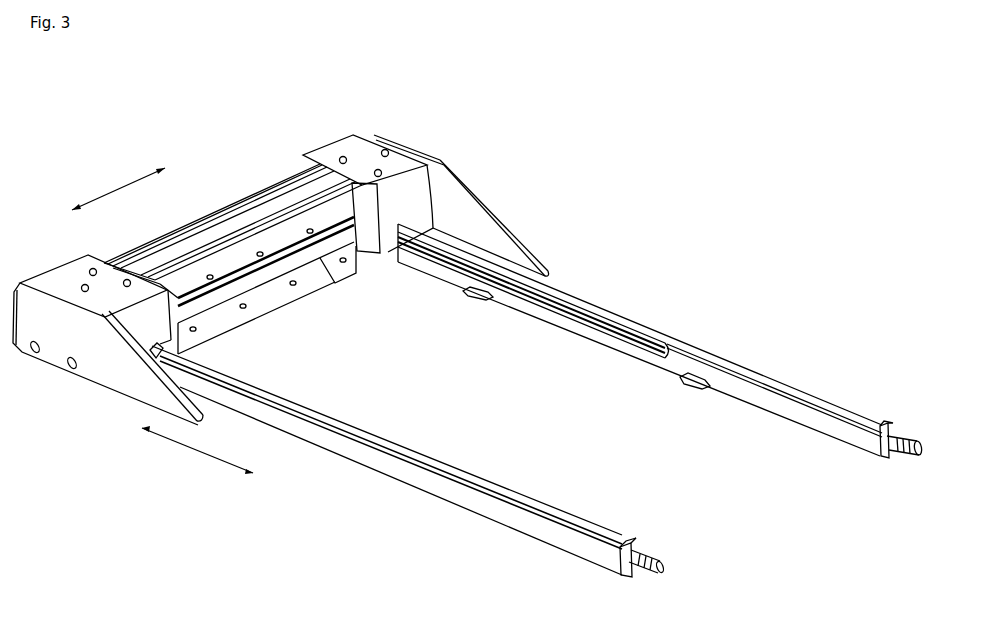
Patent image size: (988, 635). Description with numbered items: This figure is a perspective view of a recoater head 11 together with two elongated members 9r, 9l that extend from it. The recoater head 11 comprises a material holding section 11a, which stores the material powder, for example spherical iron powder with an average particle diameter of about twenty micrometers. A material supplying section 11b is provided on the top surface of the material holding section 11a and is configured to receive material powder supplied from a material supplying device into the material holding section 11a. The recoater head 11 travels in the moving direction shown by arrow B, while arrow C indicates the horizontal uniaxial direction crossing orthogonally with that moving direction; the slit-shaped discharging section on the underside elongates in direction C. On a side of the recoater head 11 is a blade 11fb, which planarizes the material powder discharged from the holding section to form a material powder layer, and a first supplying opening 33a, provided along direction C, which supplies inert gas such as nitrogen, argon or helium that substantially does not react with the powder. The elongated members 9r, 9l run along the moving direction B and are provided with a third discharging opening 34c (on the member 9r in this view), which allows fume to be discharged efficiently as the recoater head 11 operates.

The recoater head 11 is at (257, 186).
The material holding section 11a is at (152, 237).
The material supplying section 11b is at (219, 228).
The blade 11fb is at (270, 308).
The first supplying opening 33a is at (338, 266).
The third discharging opening 34c is at (580, 323).
The elongated member 9l is at (443, 487).
The elongated member 9r is at (657, 333).
The moving direction B is at (197, 450).
The horizontal uniaxial direction C is at (118, 189).